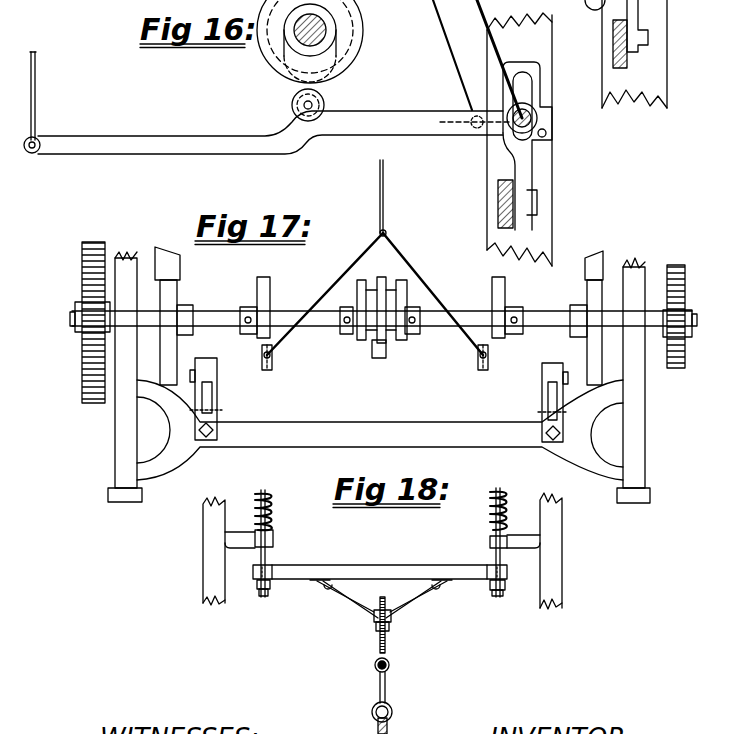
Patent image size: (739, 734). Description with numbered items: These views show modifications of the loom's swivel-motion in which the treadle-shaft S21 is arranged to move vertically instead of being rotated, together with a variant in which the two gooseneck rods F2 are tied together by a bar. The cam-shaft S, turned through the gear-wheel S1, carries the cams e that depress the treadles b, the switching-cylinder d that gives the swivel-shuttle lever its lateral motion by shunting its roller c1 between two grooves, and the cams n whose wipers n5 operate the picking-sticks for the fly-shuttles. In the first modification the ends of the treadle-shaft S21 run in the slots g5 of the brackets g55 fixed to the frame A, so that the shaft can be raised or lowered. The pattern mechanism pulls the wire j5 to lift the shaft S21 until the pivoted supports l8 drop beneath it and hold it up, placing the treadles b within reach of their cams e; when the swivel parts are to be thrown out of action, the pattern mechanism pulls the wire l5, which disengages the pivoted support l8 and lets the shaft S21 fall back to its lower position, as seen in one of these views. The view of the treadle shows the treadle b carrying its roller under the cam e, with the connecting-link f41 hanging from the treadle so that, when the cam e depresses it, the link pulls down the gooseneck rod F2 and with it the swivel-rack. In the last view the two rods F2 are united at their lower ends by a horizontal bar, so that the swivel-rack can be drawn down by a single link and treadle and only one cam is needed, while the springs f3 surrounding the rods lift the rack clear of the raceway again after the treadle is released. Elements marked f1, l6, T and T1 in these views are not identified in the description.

In FIG. 16, the switching-cylinder d is at (262, 58).
In FIG. 17, the switching-cylinder d is at (407, 296).
In FIG. 16, the cam e is at (310, 43).
In FIG. 17, the cam e is at (270, 290).
In FIG. 16, the cam-shaft S is at (338, 22).
In FIG. 17, the cam-shaft S is at (216, 310).
In FIG. 16, the roller f1 is at (326, 100).
In FIG. 16, the treadle b is at (246, 150).
In FIG. 17, the treadle b is at (258, 357).
In FIG. 18, the treadle b is at (392, 727).
In FIG. 16, the connecting-link f41 is at (37, 109).
In FIG. 18, the connecting-link f41 is at (388, 684).
In FIG. 16, the link rod l6 is at (436, 16).
In FIG. 16, the wire l5 is at (499, 59).
In FIG. 17, the wire l5 is at (393, 152).
In FIG. 16, the frame A is at (577, 133).
In FIG. 17, the frame A is at (646, 386).
In FIG. 16, the slot g5 is at (541, 66).
In FIG. 16, the treadle-shaft S21 is at (552, 92).
In FIG. 17, the treadle-shaft S21 is at (428, 332).
In FIG. 16, the pivoted support l8 is at (552, 115).
In FIG. 16, the bracket g55 is at (533, 152).
In FIG. 17, the bracket g55 is at (222, 415).
In FIG. 17, the gear-wheel S1 is at (80, 354).
In FIG. 17, the wiper n5 is at (160, 248).
In FIG. 17, the cam n is at (381, 320).
In FIG. 17, the wire j5 is at (386, 185).
In FIG. 17, the roller c1 is at (368, 352).
In FIG. 18, the frame post T is at (205, 551).
In FIG. 18, the arm T1 is at (232, 530).
In FIG. 18, the spring f3 is at (268, 528).
In FIG. 18, the gooseneck rod F2 is at (266, 494).